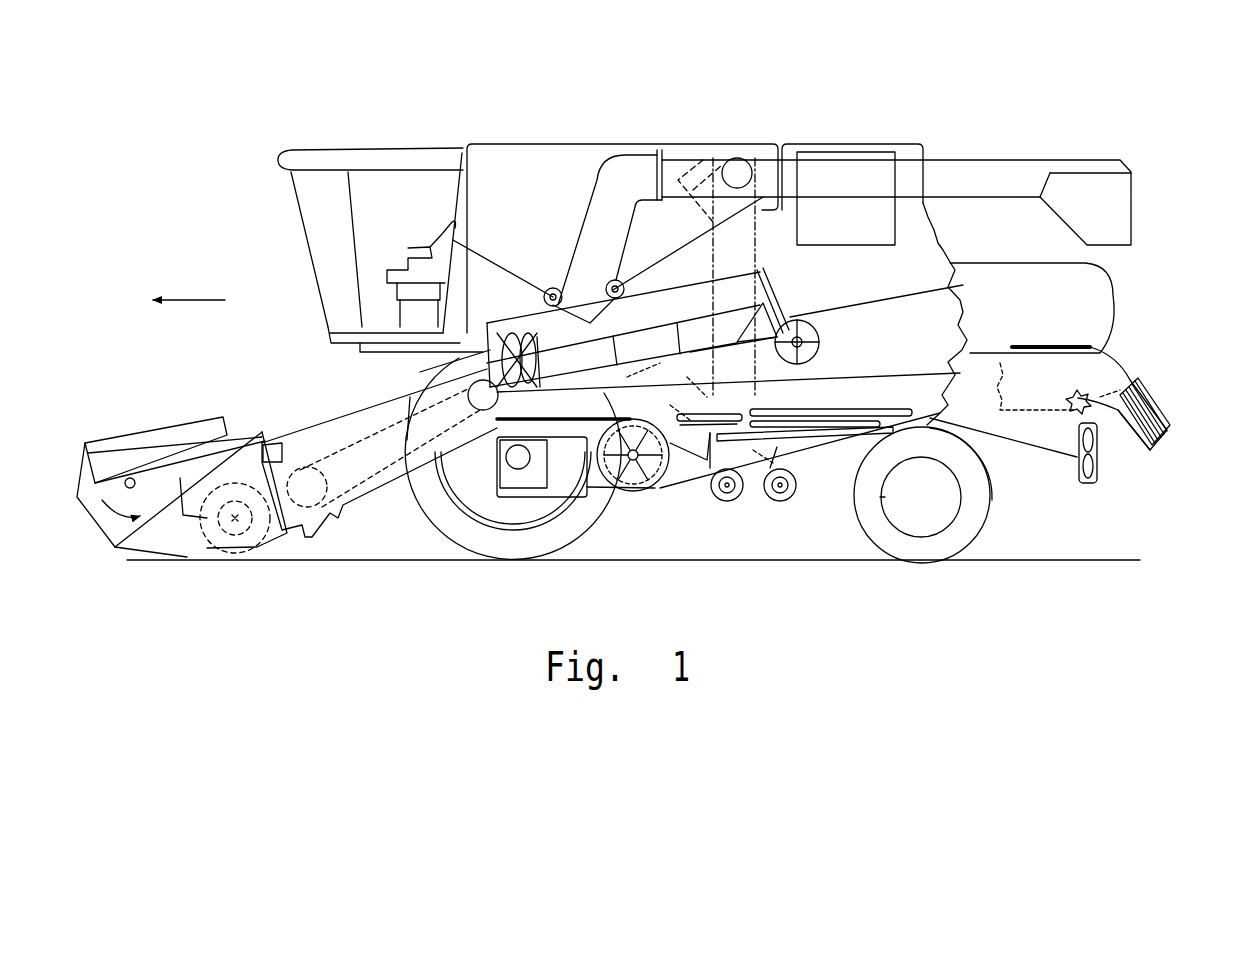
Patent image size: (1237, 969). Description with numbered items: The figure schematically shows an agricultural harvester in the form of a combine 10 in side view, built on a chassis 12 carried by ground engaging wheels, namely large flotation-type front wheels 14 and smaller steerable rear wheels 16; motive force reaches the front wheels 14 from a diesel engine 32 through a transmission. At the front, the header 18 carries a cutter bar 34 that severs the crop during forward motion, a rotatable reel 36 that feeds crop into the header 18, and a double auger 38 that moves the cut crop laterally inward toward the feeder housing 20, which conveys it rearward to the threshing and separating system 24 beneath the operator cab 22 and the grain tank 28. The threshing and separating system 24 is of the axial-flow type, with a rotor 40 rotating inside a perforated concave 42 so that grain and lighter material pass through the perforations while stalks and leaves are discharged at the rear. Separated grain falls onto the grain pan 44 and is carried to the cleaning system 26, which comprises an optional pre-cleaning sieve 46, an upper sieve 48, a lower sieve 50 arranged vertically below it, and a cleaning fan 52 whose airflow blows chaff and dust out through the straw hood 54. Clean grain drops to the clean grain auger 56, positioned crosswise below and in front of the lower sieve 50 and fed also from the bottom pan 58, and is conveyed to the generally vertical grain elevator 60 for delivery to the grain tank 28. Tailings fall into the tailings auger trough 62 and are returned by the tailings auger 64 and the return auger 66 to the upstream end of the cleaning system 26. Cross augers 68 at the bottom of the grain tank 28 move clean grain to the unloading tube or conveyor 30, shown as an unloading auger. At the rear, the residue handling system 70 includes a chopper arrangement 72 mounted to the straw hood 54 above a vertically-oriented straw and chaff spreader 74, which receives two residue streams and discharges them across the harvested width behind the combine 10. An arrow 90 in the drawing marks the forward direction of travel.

The combine 10 is at (364, 132).
The chassis 12 is at (995, 457).
The front wheels 14 is at (430, 522).
The rear wheels 16 is at (990, 511).
The header 18 is at (159, 412).
The feeder housing 20 is at (338, 420).
The operator cab 22 is at (298, 232).
The threshing and separating system 24 is at (433, 366).
The cleaning system 26 is at (687, 498).
The grain tank 28 is at (516, 144).
The unloading tube or conveyor 30 is at (1003, 160).
The diesel engine 32 is at (838, 152).
The cutter bar 34 is at (187, 557).
The rotatable reel 36 is at (92, 490).
The double auger 38 is at (243, 548).
The rotor 40 is at (510, 330).
The perforated concave 42 is at (667, 318).
The grain pan 44 is at (497, 446).
The pre-cleaning sieve 46 is at (763, 411).
The upper sieve 48 is at (845, 411).
The lower sieve 50 is at (827, 442).
The cleaning fan 52 is at (640, 492).
The straw hood 54 is at (1100, 304).
The clean grain auger 56 is at (727, 501).
The bottom pan 58 is at (860, 433).
The grain elevator 60 is at (765, 249).
The tailings auger trough 62 is at (884, 509).
The tailings auger 64 is at (775, 501).
The return auger 66 is at (680, 370).
The cross augers 68 is at (551, 288).
The residue handling system 70 is at (1149, 360).
The chopper arrangement 72 is at (1056, 381).
The straw and chaff spreader 74 is at (1120, 464).
The forward travel direction 90 is at (190, 300).